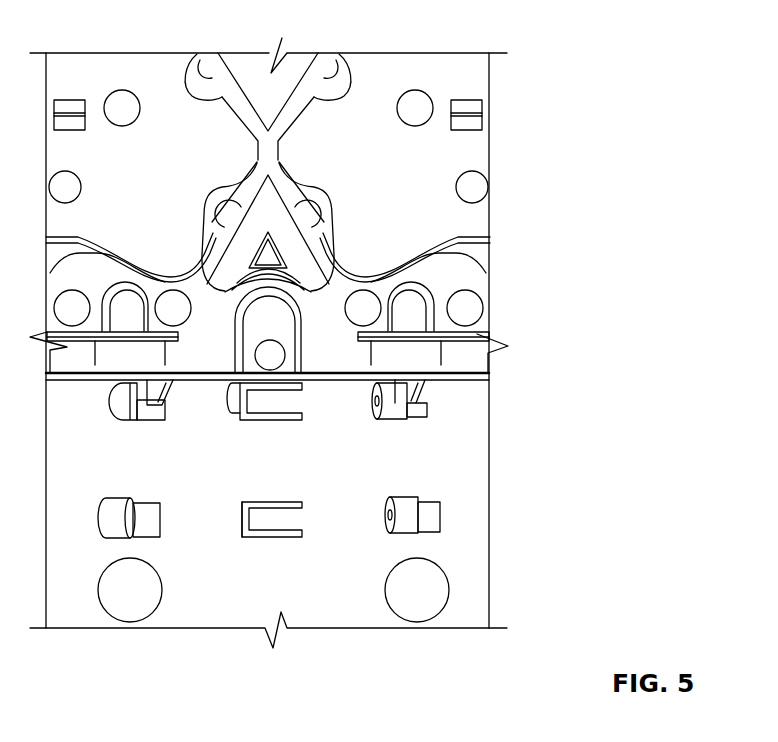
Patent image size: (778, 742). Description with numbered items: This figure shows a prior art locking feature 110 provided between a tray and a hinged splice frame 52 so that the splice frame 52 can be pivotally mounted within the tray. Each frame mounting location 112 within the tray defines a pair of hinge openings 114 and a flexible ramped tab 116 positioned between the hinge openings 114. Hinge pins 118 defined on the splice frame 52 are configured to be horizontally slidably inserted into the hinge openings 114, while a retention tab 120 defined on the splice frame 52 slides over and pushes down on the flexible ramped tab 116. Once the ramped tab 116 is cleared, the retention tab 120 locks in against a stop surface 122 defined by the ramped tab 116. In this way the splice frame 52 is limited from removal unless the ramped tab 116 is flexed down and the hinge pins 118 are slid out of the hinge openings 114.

The hinged splice frame 52 is at (425, 72).
The locking feature 110 is at (252, 428).
The frame mounting location 112 is at (323, 545).
The hinge openings 114 is at (138, 520).
The flexible ramped tab 116 is at (275, 402).
The hinge pins 118 is at (376, 398).
The retention tab 120 is at (232, 396).
The stop surface 122 is at (240, 522).